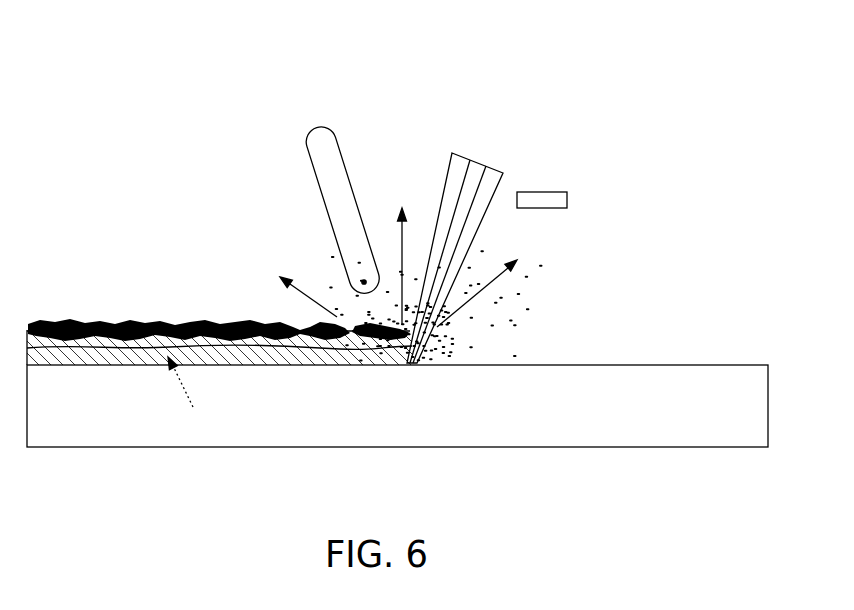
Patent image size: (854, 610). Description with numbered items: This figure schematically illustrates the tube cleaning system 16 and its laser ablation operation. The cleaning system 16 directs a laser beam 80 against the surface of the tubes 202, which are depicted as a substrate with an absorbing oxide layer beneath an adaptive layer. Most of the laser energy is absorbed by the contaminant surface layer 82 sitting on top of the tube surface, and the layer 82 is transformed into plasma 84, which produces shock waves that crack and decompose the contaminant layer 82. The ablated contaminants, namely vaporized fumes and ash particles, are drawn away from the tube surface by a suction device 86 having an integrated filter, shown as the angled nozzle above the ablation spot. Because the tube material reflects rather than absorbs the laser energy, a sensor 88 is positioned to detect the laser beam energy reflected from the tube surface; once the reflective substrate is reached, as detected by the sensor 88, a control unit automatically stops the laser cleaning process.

The tube cleaning system 16 is at (553, 73).
The laser beam 80 is at (484, 167).
The contaminant surface layer 82 is at (127, 322).
The plasma 84 is at (339, 294).
The suction device 86 is at (335, 145).
The sensor 88 is at (567, 201).
The tubes 202 is at (613, 423).